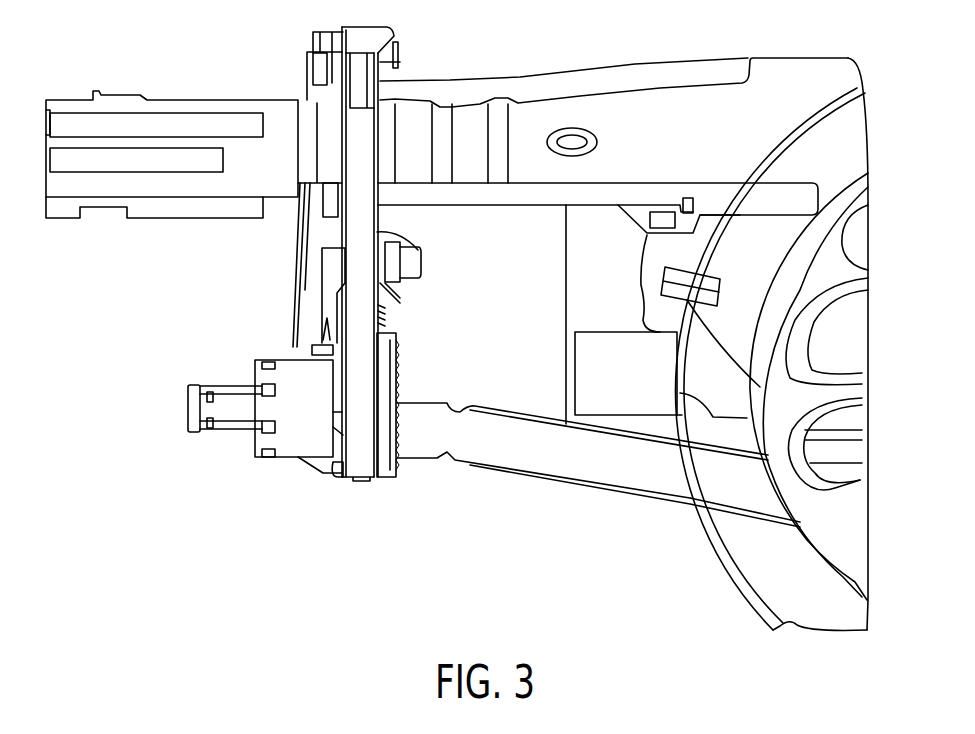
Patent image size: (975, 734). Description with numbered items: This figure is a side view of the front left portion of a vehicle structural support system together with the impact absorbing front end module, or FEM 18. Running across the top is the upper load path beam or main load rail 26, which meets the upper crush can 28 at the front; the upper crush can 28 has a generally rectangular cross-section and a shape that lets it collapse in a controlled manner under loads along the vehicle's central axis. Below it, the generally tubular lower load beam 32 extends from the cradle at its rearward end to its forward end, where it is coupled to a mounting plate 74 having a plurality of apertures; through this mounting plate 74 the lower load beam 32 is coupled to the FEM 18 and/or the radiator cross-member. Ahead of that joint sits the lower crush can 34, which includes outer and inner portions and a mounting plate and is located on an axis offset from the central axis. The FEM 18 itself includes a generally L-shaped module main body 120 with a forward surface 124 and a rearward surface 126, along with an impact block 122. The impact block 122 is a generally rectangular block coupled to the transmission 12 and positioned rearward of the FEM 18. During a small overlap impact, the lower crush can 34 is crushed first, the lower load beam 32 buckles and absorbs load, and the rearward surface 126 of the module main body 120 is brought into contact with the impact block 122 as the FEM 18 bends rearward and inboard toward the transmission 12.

The transmission 12 is at (587, 275).
The impact absorbing FEM 18 is at (368, 496).
The upper load path beam 26 is at (580, 110).
The upper crush can 28 is at (307, 117).
The lower load beam 32 is at (603, 470).
The lower crush can 34 is at (267, 470).
The mounting plate 74 is at (396, 388).
The module main body 120 is at (377, 207).
The impact block 122 is at (583, 373).
The forward surface 124 is at (334, 475).
The rearward surface 126 is at (422, 253).